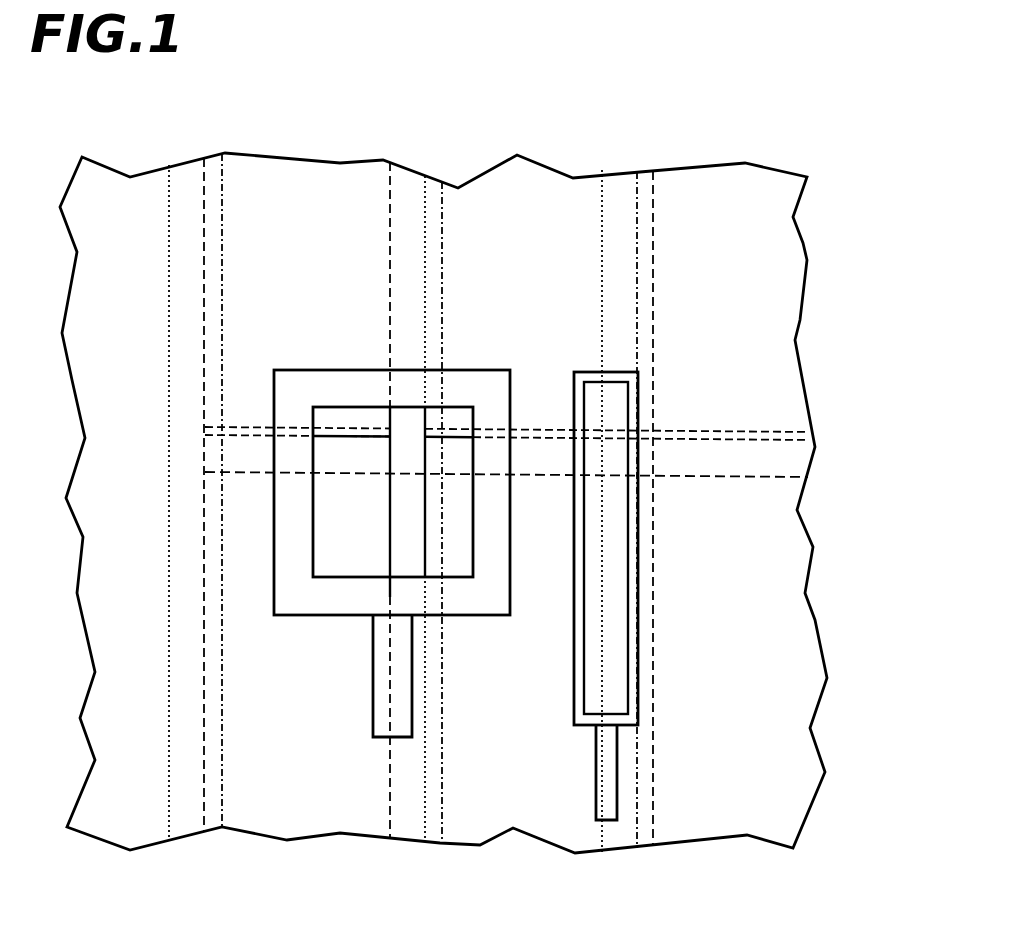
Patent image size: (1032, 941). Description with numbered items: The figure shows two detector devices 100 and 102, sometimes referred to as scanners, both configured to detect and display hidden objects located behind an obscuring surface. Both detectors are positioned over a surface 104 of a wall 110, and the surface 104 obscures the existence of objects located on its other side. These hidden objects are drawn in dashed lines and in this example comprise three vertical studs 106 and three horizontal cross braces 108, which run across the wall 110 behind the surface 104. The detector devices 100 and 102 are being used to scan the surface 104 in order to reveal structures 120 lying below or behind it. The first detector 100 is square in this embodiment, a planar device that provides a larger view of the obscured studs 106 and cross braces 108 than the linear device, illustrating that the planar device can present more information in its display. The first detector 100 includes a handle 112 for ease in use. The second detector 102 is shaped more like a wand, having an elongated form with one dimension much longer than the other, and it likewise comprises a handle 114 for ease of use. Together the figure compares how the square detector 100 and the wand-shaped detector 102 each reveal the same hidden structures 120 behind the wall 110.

The first detector device 100 is at (462, 354).
The second detector device 102 is at (662, 607).
The surface 104 is at (488, 462).
The vertical studs 106 is at (183, 178).
The horizontal cross braces 108 is at (243, 460).
The wall 110 is at (803, 242).
The handle 112 is at (373, 683).
The handle 114 is at (596, 778).
The structures 120 is at (350, 411).